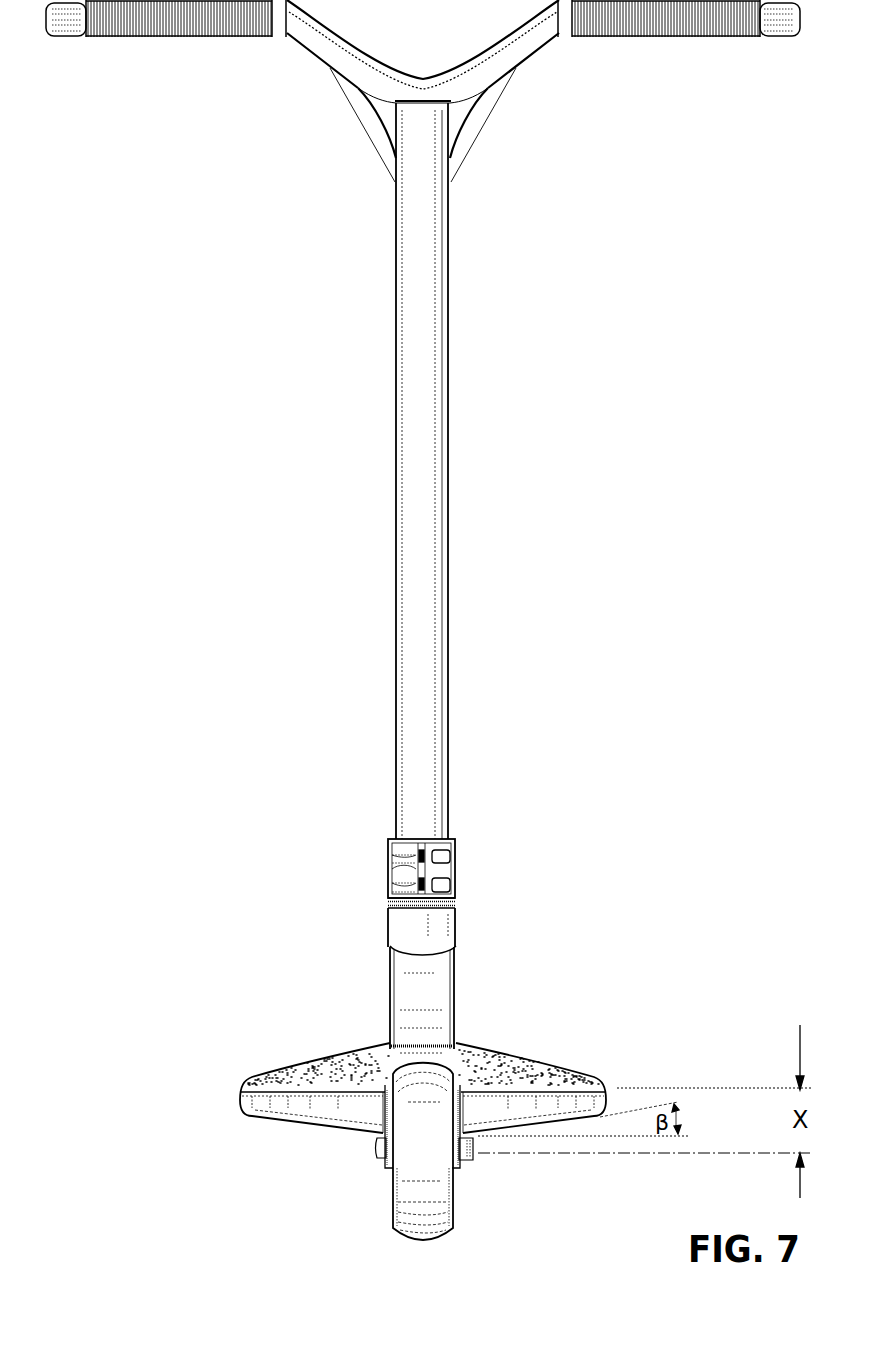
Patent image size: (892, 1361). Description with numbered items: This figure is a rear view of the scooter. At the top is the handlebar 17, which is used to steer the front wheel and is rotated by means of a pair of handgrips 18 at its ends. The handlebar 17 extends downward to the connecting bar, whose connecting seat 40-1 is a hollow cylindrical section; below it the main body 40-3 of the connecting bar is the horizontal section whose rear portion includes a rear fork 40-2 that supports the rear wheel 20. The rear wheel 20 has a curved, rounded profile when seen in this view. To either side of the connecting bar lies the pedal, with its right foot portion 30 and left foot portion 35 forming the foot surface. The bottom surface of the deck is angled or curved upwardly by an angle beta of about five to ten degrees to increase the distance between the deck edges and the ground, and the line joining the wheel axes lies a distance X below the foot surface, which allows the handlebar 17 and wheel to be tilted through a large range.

The handlebar 17 is at (425, 452).
The handgrips 18 is at (153, 22).
The rear wheel 20 is at (422, 1192).
The right foot portion 30 is at (555, 1073).
The left foot portion 35 is at (340, 1075).
The connecting seat 40-1 is at (420, 938).
The rear fork 40-2 is at (462, 1113).
The main body 40-3 is at (418, 997).